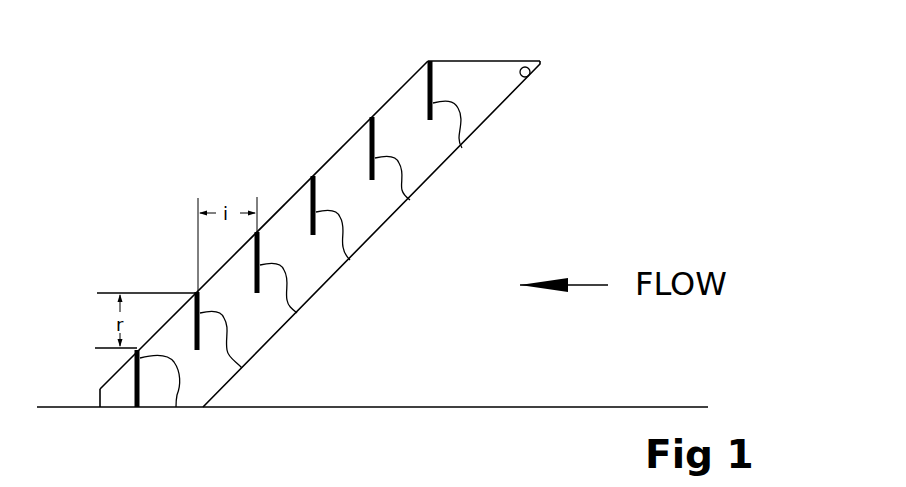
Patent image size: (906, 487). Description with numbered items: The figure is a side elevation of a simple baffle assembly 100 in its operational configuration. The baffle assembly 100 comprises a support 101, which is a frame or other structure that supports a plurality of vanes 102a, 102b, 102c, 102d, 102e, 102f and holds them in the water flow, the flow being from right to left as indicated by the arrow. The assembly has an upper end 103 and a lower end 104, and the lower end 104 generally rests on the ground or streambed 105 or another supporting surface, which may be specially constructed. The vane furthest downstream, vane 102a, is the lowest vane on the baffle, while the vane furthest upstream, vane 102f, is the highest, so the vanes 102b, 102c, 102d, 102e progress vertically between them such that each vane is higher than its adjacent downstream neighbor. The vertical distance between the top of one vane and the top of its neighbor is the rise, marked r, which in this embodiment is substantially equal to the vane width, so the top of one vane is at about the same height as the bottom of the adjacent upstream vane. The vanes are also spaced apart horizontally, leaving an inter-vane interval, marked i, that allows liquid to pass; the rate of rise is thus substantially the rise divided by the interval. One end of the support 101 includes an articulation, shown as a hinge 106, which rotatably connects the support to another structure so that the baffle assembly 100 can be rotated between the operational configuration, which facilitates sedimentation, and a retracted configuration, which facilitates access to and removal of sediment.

The baffle assembly 100 is at (315, 236).
The support 101 is at (385, 103).
The vane 102a is at (176, 407).
The vane 102b is at (242, 368).
The vane 102c is at (297, 313).
The vane 102d is at (350, 260).
The vane 102e is at (410, 200).
The vane 102f is at (462, 148).
The upper end 103 is at (503, 42).
The lower end 104 is at (99, 395).
The streambed 105 is at (462, 408).
The hinge 106 is at (540, 64).